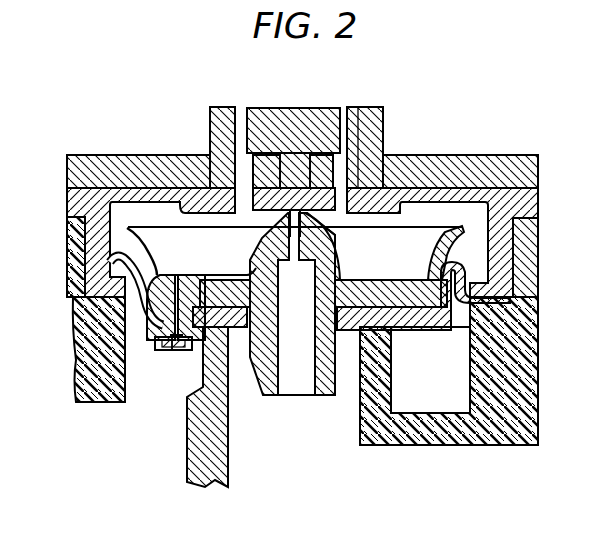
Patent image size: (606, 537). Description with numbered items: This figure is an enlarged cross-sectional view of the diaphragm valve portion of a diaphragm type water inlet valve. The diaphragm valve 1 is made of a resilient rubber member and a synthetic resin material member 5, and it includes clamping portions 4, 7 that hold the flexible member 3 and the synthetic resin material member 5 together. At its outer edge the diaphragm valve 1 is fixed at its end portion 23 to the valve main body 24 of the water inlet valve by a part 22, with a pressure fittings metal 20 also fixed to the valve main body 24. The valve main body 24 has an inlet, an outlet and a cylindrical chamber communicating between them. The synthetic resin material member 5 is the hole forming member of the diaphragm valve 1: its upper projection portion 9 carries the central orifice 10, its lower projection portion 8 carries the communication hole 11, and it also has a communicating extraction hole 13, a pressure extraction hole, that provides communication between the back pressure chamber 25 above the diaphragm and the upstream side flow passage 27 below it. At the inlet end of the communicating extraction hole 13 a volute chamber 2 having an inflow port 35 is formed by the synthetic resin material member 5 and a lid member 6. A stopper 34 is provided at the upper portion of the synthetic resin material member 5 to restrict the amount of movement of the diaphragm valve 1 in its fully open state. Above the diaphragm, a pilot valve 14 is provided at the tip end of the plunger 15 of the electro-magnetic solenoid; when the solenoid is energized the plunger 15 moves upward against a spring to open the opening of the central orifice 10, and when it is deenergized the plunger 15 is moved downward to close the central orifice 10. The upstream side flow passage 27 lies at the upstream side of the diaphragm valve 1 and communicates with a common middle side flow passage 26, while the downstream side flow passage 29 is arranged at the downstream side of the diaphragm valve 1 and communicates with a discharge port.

The diaphragm valve 1 is at (431, 325).
The volute chamber 2 is at (164, 350).
The flexible member 3 is at (123, 260).
The clamping portion 4 is at (353, 328).
The synthetic resin material member 5 is at (399, 300).
The lid member 6 is at (189, 350).
The clamping portion 7 is at (162, 320).
The lower projection portion 8 is at (333, 377).
The upper projection portion 9 is at (334, 245).
The central orifice 10 is at (276, 244).
The communication hole 11 is at (287, 355).
The communicating extraction hole 13 is at (182, 292).
The pilot valve 14 is at (252, 160).
The plunger 15 is at (258, 106).
The pressure fittings metal 20 is at (522, 158).
The part 22 is at (67, 190).
The end portion 23 is at (510, 298).
The valve main body 24 is at (521, 408).
The back pressure chamber 25 is at (396, 243).
The common middle side flow passage 26 is at (438, 405).
The upstream side flow passage 27 is at (160, 395).
The downstream side flow passage 29 is at (297, 423).
The stopper 34 is at (438, 220).
The inflow port 35 is at (155, 343).